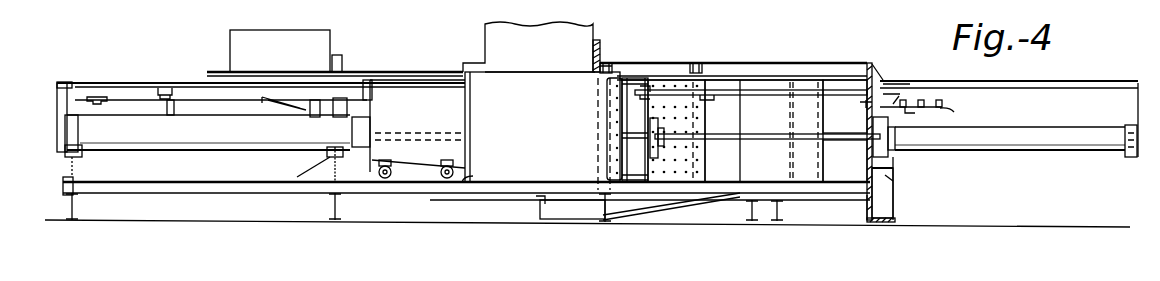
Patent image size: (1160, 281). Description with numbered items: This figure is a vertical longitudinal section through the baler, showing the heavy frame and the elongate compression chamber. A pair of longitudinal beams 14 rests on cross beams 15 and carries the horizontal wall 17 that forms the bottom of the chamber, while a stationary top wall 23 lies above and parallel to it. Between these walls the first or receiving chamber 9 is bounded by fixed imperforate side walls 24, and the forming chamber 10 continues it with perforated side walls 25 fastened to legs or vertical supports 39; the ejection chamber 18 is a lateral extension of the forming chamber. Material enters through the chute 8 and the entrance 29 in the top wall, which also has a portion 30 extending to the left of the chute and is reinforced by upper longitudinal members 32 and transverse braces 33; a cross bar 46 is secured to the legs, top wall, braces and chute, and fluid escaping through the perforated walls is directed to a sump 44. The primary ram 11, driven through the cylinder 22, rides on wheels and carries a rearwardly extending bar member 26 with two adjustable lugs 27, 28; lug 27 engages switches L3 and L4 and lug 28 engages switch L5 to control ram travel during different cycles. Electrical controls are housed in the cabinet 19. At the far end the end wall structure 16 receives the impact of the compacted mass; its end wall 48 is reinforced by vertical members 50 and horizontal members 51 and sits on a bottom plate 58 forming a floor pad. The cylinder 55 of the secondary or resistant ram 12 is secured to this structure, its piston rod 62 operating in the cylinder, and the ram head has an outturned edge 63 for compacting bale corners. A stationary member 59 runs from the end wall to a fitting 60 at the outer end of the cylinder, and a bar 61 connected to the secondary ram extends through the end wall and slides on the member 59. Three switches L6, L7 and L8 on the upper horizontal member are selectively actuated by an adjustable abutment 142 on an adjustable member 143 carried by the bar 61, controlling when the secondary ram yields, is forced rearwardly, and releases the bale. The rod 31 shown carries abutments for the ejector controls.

The chute 8 is at (485, 34).
The first or receiving chamber 9 is at (512, 76).
The forming chamber 10 is at (706, 175).
The primary ram 11 is at (455, 113).
The secondary or resistant ram 12 is at (632, 158).
The longitudinal beams 14 is at (152, 193).
The cross beams 15 is at (74, 208).
The end wall structure 16 is at (893, 162).
The horizontal wall 17 is at (479, 174).
The ejection chamber 18 is at (784, 108).
The cabinet 19 is at (328, 37).
The cylinder 22 is at (135, 145).
The stationary top wall 23 is at (618, 75).
The imperforate side walls 24 is at (524, 139).
The perforated side walls 25 is at (680, 163).
The bar member 26 is at (57, 99).
The lug 27 is at (165, 88).
The lug 28 is at (107, 102).
The entrance 29 is at (570, 76).
The portion of top wall 30 is at (418, 72).
The rod 31 is at (850, 75).
The upper longitudinal members 32 is at (869, 64).
The transverse braces 33 is at (604, 63).
The legs or vertical supports 39 is at (600, 108).
The sump 44 is at (540, 211).
The cross bar 46 is at (593, 40).
The end wall 48 is at (867, 210).
The vertical members 50 is at (890, 195).
The horizontal members 51 is at (927, 100).
The cylinder 55 is at (1011, 150).
The bottom plate 58 is at (893, 218).
The stationary member 59 is at (1106, 89).
The fitting 60 is at (1125, 130).
The bar 61 is at (838, 97).
The piston rod 62 is at (838, 138).
The outturned edge 63 is at (610, 82).
The adjustable abutment 142 is at (700, 101).
The adjustable member 143 is at (715, 99).
The switch L3 is at (166, 109).
The switch L4 is at (310, 118).
The switch L5 is at (328, 124).
The switch L6 is at (866, 106).
The switch L7 is at (954, 112).
The switch L8 is at (917, 116).